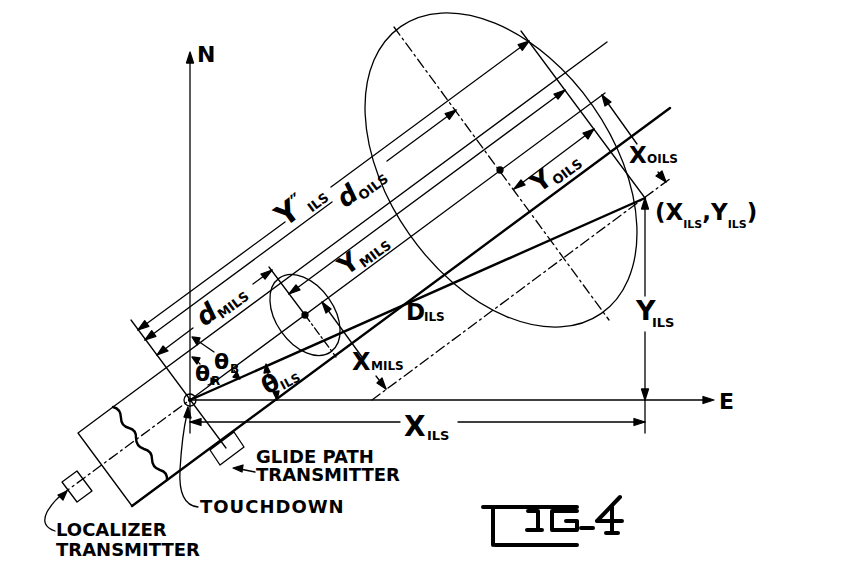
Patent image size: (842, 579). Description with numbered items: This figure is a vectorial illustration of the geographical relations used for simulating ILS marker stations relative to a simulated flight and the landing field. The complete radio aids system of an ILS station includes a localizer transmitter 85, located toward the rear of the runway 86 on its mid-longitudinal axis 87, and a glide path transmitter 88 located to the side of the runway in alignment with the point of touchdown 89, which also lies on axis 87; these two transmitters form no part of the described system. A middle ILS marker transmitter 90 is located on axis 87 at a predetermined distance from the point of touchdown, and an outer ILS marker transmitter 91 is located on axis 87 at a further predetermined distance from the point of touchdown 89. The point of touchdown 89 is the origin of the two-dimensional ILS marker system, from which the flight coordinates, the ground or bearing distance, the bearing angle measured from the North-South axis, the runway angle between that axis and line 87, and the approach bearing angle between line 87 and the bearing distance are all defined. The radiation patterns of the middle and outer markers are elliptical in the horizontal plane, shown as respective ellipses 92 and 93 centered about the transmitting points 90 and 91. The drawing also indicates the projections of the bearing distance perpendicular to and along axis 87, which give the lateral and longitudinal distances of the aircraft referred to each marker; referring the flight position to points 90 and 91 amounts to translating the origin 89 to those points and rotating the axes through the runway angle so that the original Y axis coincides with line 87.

The localizer transmitter 85 is at (70, 476).
The runway 86 is at (103, 416).
The mid-longitudinal axis 87 is at (114, 458).
The glide path transmitter 88 is at (222, 470).
The point of touchdown 89 is at (184, 400).
The middle ILS marker transmitter 90 is at (302, 315).
The outer ILS marker transmitter 91 is at (500, 173).
The ellipse 92 is at (292, 279).
The ellipse 93 is at (524, 314).